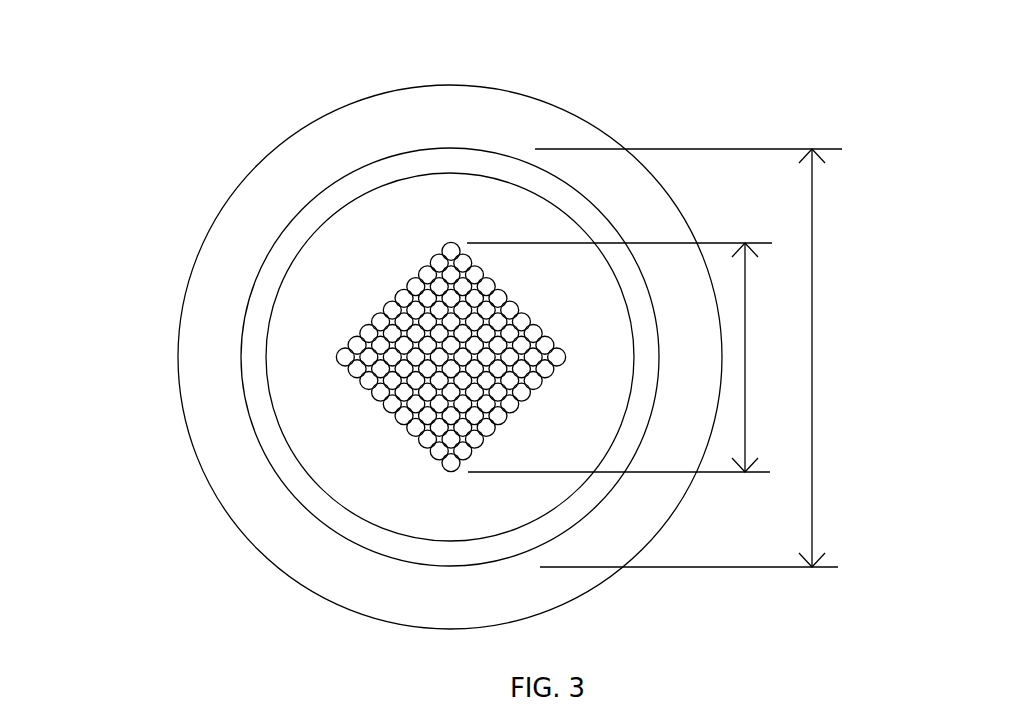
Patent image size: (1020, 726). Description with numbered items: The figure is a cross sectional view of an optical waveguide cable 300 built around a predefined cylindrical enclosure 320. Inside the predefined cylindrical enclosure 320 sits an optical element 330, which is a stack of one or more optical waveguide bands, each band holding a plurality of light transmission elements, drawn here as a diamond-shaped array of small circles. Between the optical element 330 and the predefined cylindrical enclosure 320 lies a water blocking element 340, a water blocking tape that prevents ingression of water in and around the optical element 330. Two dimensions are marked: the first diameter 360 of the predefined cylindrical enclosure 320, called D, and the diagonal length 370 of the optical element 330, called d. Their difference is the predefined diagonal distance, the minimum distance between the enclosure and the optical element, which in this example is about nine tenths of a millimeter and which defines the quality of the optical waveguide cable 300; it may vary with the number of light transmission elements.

The optical waveguide cable 300 is at (80, 64).
The predefined cylindrical enclosure 320 is at (427, 123).
The optical element 330 is at (450, 320).
The water blocking element 340 is at (370, 533).
The first diameter 360 is at (813, 212).
The diagonal length 370 is at (745, 393).